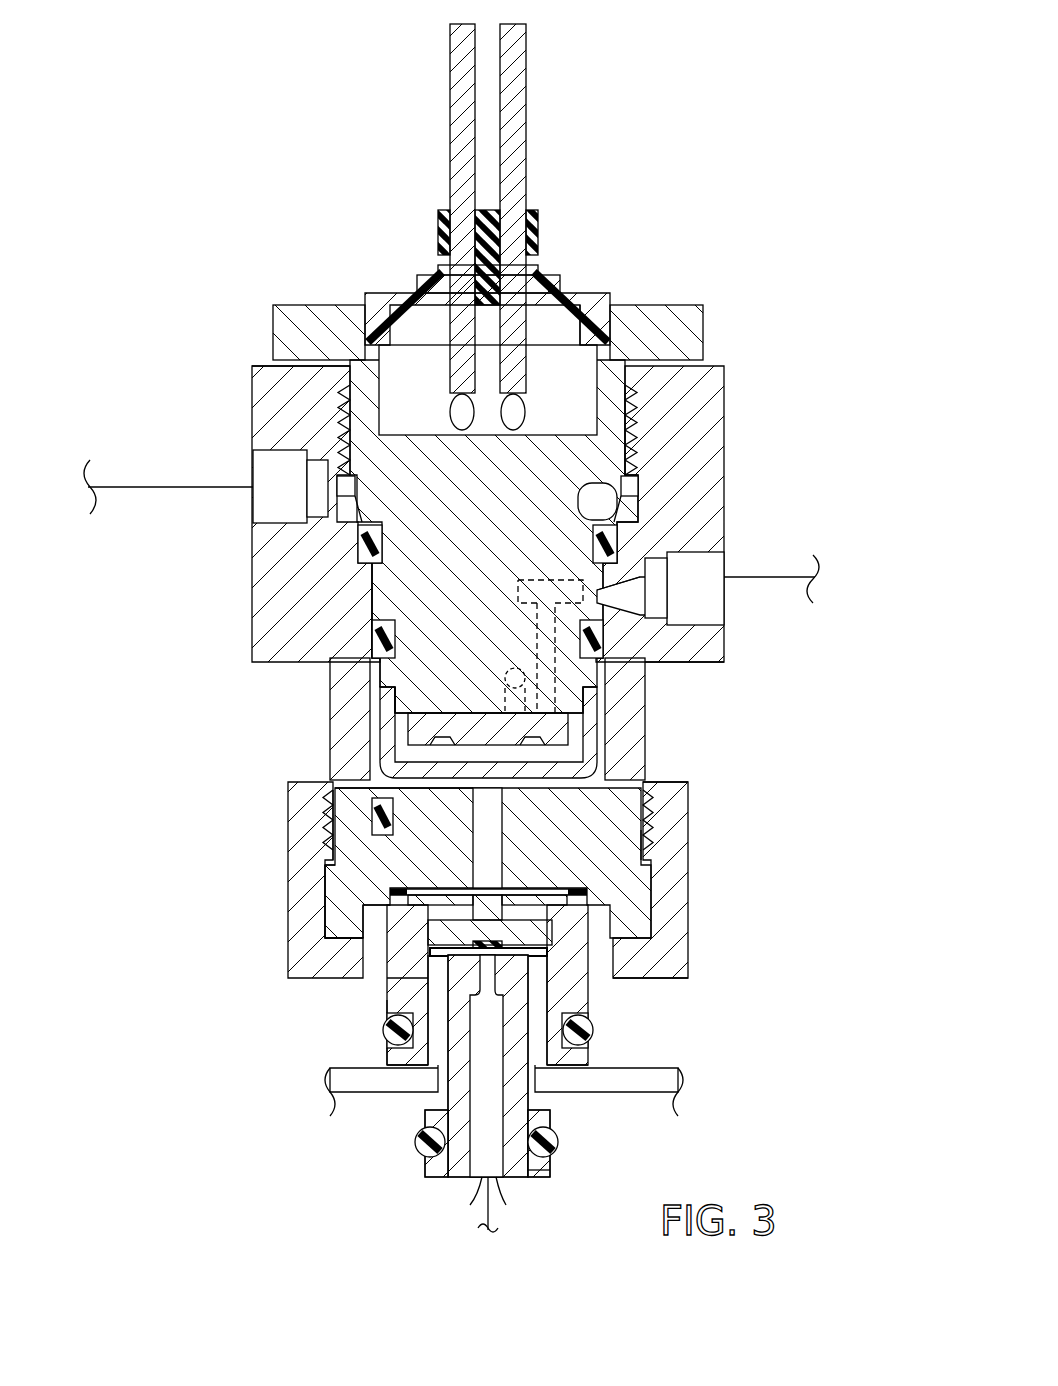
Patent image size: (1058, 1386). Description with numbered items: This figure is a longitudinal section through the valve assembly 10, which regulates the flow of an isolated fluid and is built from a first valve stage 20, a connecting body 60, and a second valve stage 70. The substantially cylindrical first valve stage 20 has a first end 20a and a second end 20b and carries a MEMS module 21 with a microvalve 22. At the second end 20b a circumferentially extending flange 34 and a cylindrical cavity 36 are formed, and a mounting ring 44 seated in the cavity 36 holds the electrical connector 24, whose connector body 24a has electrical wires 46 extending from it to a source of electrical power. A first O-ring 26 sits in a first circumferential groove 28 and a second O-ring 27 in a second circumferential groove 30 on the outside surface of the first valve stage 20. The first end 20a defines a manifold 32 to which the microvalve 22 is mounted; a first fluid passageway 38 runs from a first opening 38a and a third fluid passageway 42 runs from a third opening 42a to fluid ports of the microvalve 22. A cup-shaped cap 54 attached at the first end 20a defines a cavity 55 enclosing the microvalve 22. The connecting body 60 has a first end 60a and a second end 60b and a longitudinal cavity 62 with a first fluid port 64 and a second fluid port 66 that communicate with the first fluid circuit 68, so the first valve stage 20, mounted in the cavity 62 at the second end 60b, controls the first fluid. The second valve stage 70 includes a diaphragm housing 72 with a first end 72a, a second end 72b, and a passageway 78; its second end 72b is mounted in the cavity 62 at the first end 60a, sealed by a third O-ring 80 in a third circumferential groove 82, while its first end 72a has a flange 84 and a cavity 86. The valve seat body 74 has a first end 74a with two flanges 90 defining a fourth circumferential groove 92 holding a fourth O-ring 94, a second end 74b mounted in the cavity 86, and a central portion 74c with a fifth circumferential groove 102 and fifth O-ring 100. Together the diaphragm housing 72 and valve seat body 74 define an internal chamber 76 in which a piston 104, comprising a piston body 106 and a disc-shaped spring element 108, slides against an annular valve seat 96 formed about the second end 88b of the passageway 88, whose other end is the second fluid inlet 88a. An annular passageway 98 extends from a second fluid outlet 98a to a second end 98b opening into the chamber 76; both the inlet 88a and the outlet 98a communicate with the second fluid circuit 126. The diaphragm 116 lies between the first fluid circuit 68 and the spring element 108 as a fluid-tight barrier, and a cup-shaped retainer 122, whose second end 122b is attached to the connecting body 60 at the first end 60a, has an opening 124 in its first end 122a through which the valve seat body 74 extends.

The valve assembly 10 is at (283, 112).
The first valve stage 20 is at (268, 298).
The first end of the first valve stage 20a is at (330, 690).
The second end of the first valve stage 20b is at (273, 328).
The MEMS module 21 is at (614, 444).
The microvalve 22 is at (570, 730).
The electrical connector 24 is at (423, 180).
The connector body 24a is at (438, 224).
The first O-ring 26 is at (618, 545).
The second O-ring 27 is at (603, 640).
The first circumferential groove 28 is at (364, 545).
The second circumferential groove 30 is at (375, 640).
The manifold 32 is at (380, 715).
The flange 34 is at (704, 308).
The cavity 36 is at (557, 335).
The first fluid passageway 38 is at (590, 615).
The first opening 38a is at (600, 600).
The third fluid passageway 42 is at (537, 708).
The third opening 42a is at (525, 680).
The mounting ring 44 is at (370, 292).
The electrical wires 46 is at (476, 72).
The cap 54 is at (570, 748).
The cavity 55 is at (405, 740).
The connecting body 60 is at (732, 453).
The first end of the connecting body 60a is at (651, 850).
The second end of the connecting body 60b is at (252, 368).
The cavity 62 is at (368, 590).
The first fluid port 64 is at (690, 556).
The second fluid port 66 is at (258, 468).
The first fluid circuit 68 is at (466, 533).
The second valve stage 70 is at (812, 738).
The diaphragm housing 72 is at (658, 880).
The first end of the diaphragm housing 72a is at (325, 880).
The second end of the diaphragm housing 72b is at (350, 790).
The valve seat body 74 is at (602, 1006).
The first end of the valve seat body 74a is at (550, 1170).
The second end of the valve seat body 74b is at (625, 905).
The central portion of the valve seat body 74c is at (592, 988).
The internal chamber 76 is at (390, 955).
The passageway 78 is at (590, 765).
The third O-ring 80 is at (641, 830).
The third circumferential groove 82 is at (370, 810).
The flange 84 is at (390, 860).
The cavity 86 is at (380, 900).
The passageway 88 is at (475, 1170).
The second fluid inlet 88a is at (490, 1228).
The second end of the passageway 88b is at (547, 947).
The flanges 90 is at (430, 1165).
The fourth circumferential groove 92 is at (425, 1135).
The fourth O-ring 94 is at (560, 1142).
The annular valve seat 96 is at (565, 932).
The annular passageway 98 is at (420, 1078).
The second fluid outlet 98a is at (548, 1072).
The second end of the annular passageway 98b is at (413, 1030).
The fifth O-ring 100 is at (595, 1040).
The fifth circumferential groove 102 is at (430, 1050).
The piston 104 is at (587, 915).
The piston body 106 is at (420, 1005).
The spring element 108 is at (385, 920).
The diaphragm 116 is at (330, 870).
The retainer 122 is at (665, 840).
The first end of the retainer 122a is at (685, 962).
The second end of the retainer 122b is at (680, 795).
The opening 124 is at (400, 985).
The second fluid circuit 126 is at (486, 1205).